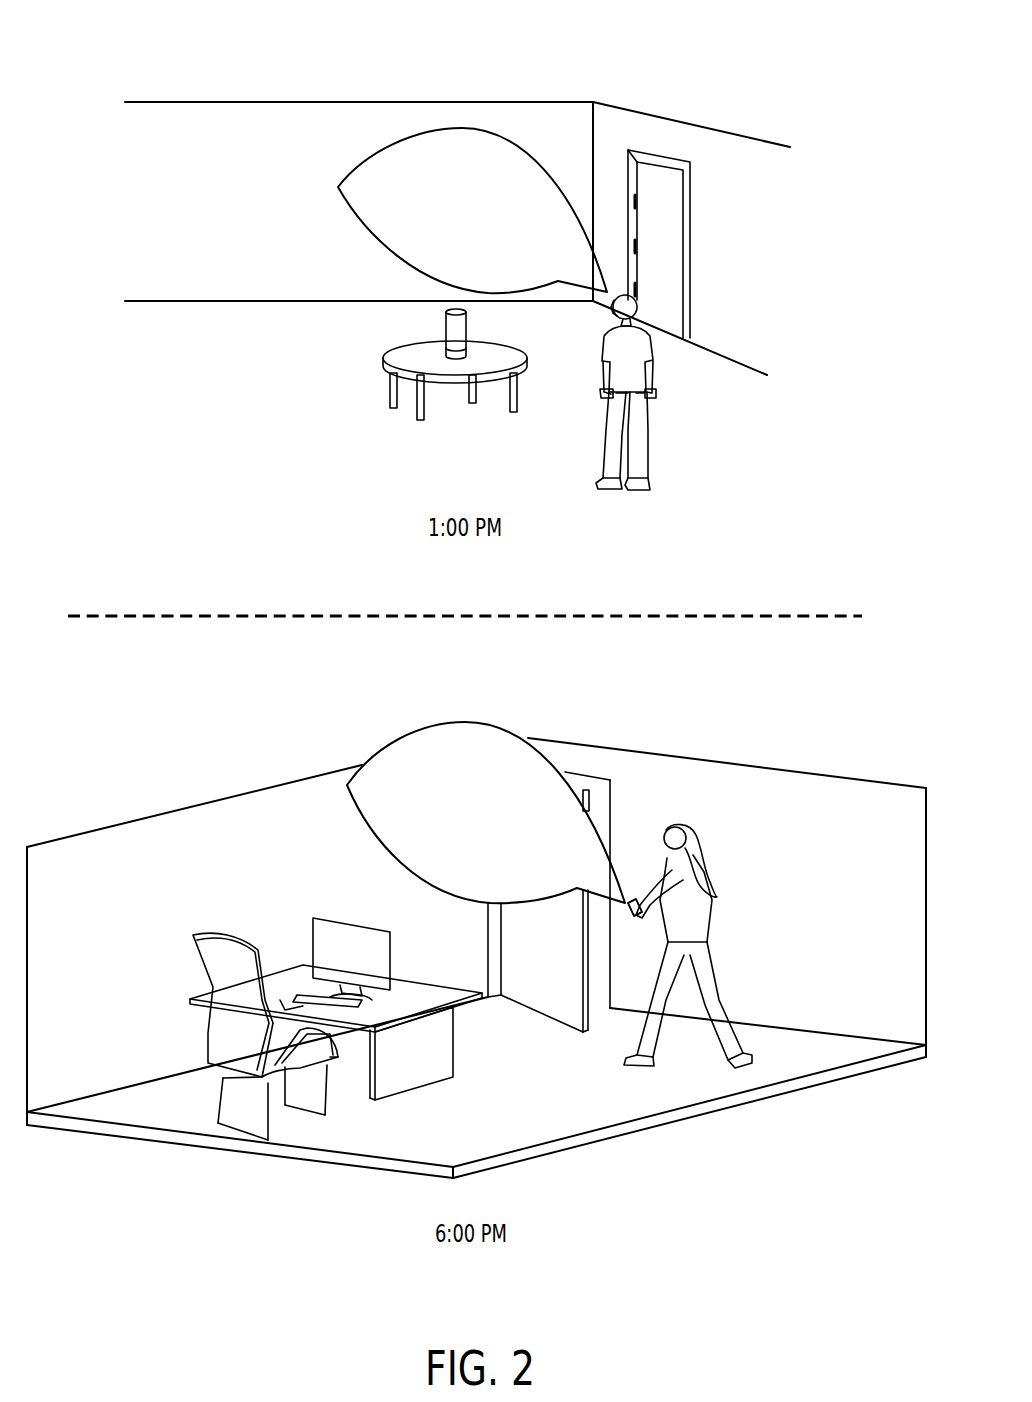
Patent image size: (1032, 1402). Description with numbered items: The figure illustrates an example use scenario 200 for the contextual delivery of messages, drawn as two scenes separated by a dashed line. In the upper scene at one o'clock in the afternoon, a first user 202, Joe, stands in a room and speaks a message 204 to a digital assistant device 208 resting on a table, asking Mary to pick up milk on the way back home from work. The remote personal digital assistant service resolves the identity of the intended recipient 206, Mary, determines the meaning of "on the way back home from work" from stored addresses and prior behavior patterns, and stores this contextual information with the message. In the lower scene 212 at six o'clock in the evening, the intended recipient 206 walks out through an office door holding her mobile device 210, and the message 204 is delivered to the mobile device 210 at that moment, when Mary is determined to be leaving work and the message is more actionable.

The use scenario 200 is at (788, 64).
The first user 202 is at (648, 342).
The message 204 is at (521, 171).
The intended recipient 206 is at (705, 852).
The digital assistant device 208 is at (467, 330).
The mobile device 210 is at (628, 900).
The second environment / scene at 6:00 PM 212 is at (788, 691).